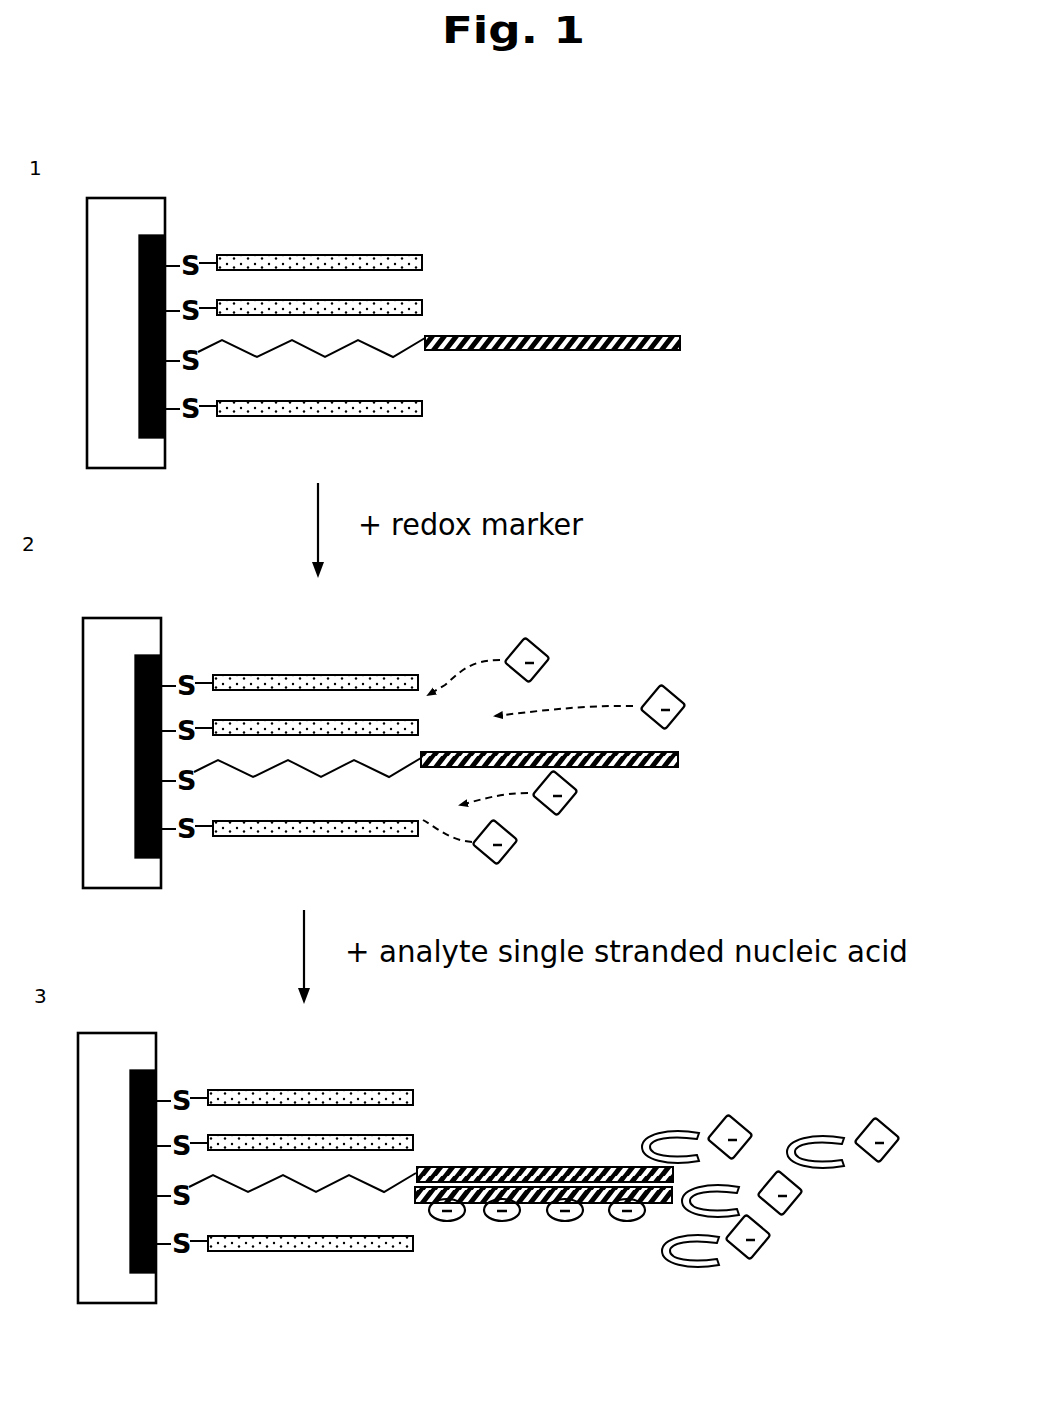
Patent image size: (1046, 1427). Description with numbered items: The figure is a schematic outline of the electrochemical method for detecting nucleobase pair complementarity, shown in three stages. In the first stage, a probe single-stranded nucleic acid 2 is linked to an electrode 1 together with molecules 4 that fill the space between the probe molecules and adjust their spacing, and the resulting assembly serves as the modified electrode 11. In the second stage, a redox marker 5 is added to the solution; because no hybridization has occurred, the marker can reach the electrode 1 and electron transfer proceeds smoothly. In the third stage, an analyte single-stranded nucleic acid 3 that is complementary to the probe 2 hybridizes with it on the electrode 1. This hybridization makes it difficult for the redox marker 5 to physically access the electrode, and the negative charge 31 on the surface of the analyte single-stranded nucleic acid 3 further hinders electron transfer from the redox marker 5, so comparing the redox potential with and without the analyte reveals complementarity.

The electrode 1 is at (167, 242).
The single-stranded nucleic acid probe 2 is at (608, 350).
The analyte single-stranded nucleic acid 3 is at (530, 1203).
The molecules filling space between probe molecules 4 is at (422, 306).
The redox marker 5 is at (545, 648).
The modified electrode 11 is at (717, 189).
The negative charge 31 is at (500, 1222).